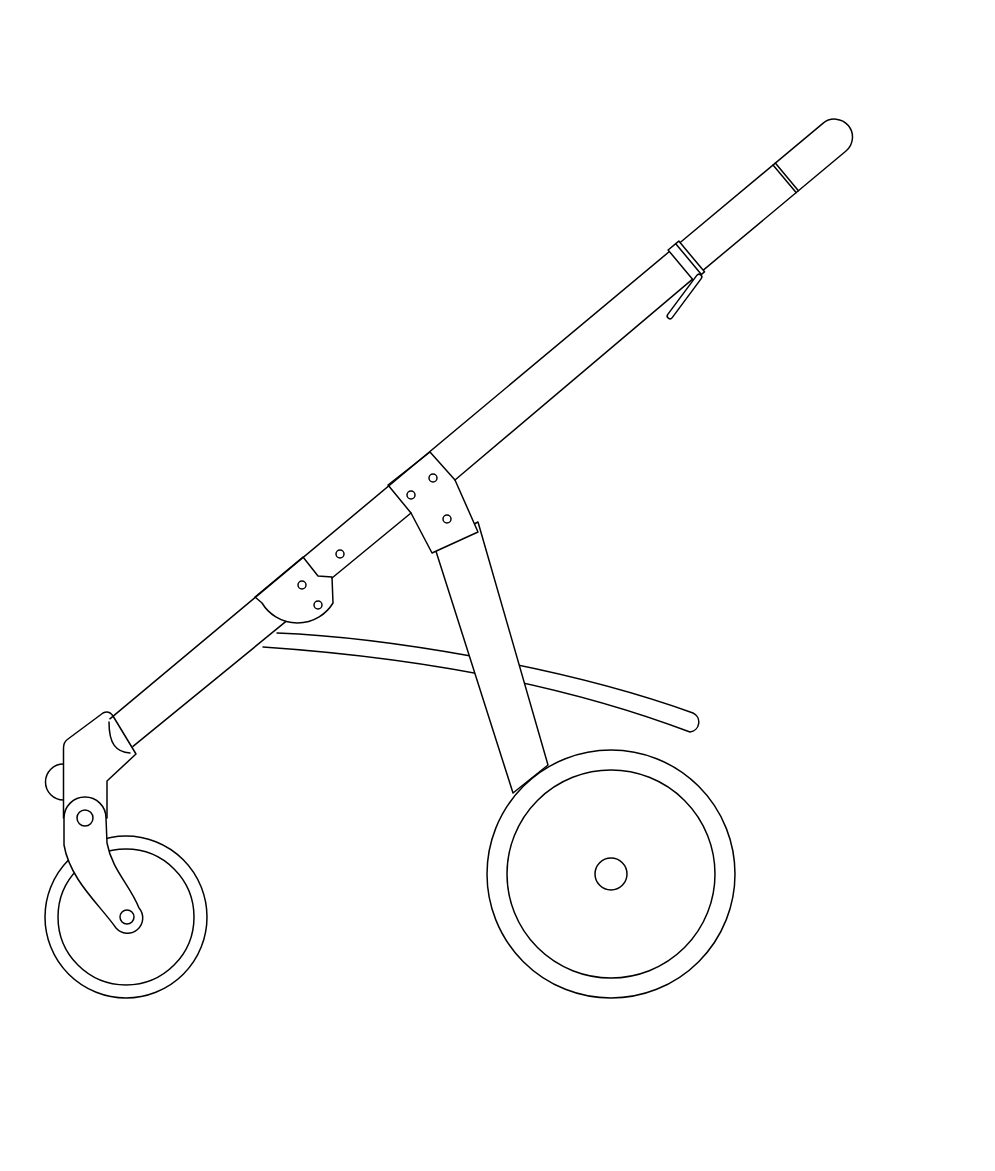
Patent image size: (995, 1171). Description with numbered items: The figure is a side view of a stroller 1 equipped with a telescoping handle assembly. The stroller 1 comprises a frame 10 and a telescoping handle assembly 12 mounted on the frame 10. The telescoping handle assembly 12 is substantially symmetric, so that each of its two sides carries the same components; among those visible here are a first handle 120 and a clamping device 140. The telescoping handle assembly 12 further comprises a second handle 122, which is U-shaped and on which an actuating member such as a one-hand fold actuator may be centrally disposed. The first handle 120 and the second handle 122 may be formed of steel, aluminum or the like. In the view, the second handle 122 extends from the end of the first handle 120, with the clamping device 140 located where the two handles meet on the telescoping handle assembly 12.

The stroller 1 is at (243, 62).
The frame 10 is at (110, 592).
The telescoping handle assembly 12 is at (752, 282).
The first handle 120 is at (572, 348).
The second handle 122 is at (722, 228).
The clamping device 140 is at (680, 312).